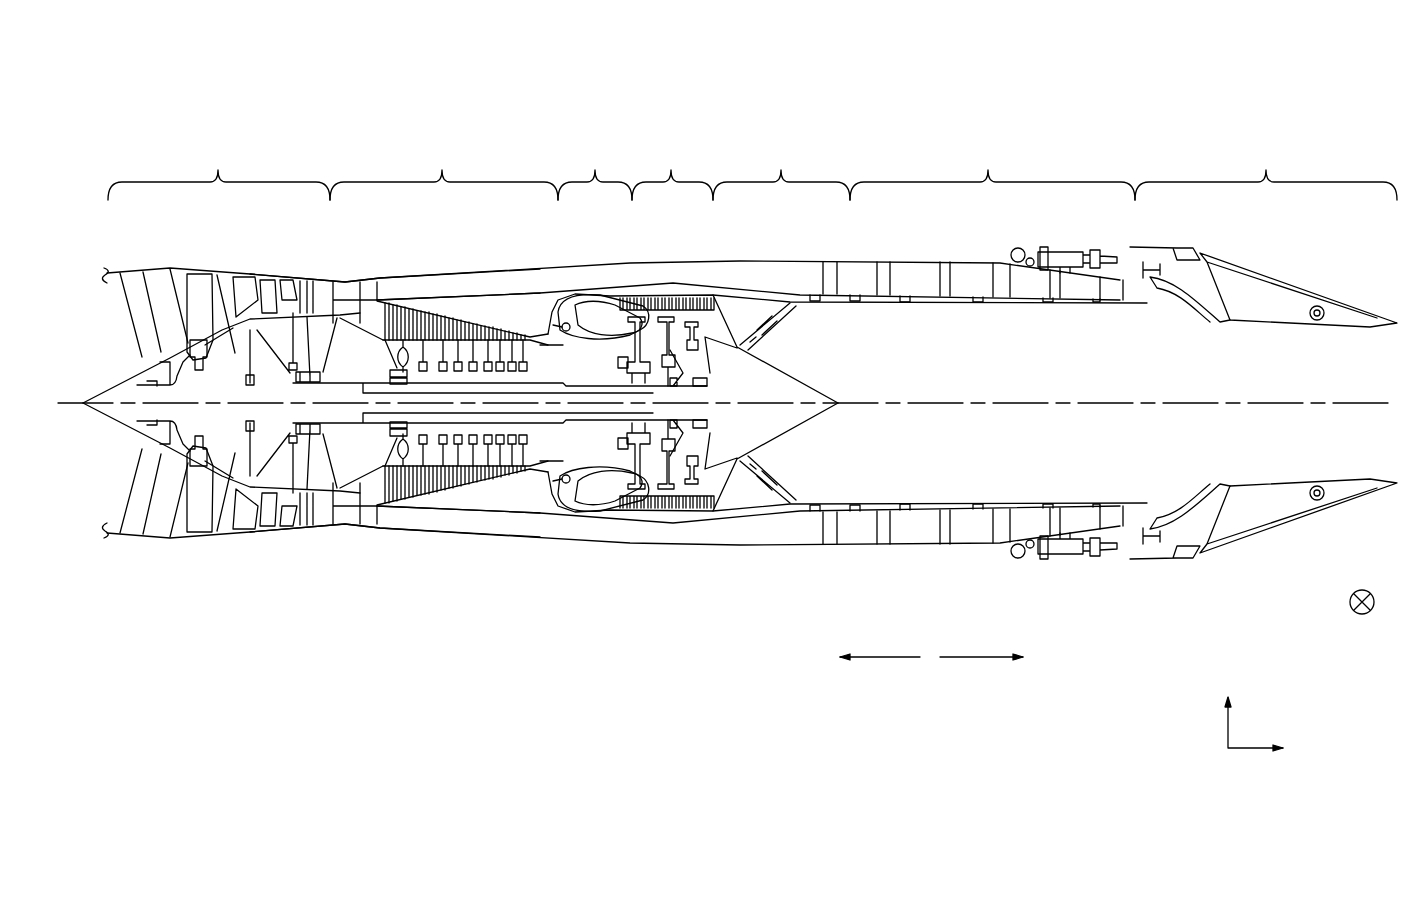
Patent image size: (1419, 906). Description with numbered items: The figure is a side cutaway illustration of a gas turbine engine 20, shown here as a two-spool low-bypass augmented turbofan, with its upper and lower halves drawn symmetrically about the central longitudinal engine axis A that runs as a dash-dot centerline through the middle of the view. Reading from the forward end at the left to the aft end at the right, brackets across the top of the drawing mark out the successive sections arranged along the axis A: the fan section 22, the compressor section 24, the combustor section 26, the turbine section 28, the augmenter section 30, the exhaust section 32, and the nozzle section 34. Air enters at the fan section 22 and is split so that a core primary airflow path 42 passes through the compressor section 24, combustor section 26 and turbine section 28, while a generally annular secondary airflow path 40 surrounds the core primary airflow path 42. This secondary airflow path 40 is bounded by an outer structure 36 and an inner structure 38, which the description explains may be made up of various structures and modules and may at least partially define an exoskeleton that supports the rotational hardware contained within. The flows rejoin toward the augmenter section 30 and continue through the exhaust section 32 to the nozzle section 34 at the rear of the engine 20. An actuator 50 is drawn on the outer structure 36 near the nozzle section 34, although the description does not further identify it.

The gas turbine engine 20 is at (1158, 92).
The fan section 22 is at (219, 169).
The compressor section 24 is at (444, 169).
The combustor section 26 is at (595, 169).
The turbine section 28 is at (672, 169).
The augmenter section 30 is at (781, 169).
The exhaust section 32 is at (992, 169).
The nozzle section 34 is at (1266, 169).
The outer structure 36 is at (558, 545).
The inner structure 38 is at (482, 495).
The secondary airflow path 40 is at (418, 517).
The core primary airflow path 42 is at (348, 497).
The actuator 50 is at (1070, 545).
The central longitudinal engine axis A is at (1222, 402).